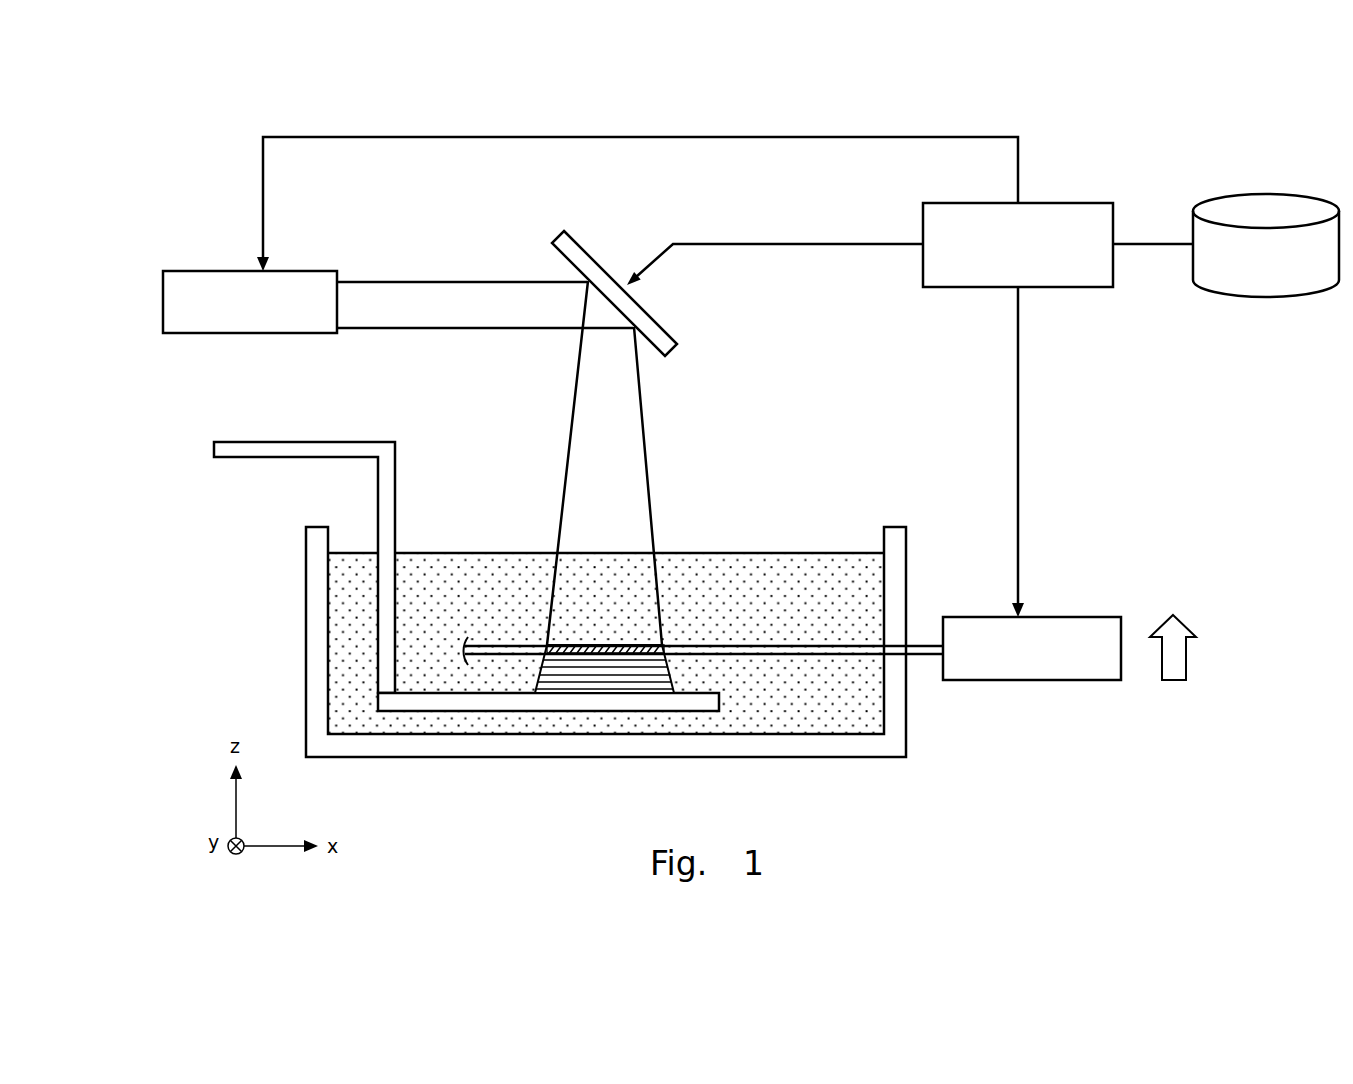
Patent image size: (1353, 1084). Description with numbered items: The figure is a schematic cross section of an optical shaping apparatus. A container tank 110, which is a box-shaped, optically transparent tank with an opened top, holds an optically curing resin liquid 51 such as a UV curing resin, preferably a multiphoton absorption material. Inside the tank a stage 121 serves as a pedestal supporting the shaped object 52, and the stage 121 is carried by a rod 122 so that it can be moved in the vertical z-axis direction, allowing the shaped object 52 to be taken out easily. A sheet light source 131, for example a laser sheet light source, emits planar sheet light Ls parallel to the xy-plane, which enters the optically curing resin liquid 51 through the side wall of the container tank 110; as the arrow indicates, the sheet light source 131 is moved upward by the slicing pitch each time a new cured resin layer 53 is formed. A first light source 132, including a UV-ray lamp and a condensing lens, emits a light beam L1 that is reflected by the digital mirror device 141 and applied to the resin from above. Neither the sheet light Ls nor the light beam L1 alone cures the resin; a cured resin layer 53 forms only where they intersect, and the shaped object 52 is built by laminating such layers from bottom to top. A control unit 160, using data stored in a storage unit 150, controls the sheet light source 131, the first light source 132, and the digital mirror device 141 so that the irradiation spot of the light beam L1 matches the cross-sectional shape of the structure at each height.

The container tank 110 is at (310, 617).
The stage 121 is at (620, 705).
The rod 122 is at (297, 442).
The sheet light source 131 is at (1023, 683).
The first light source 132 is at (163, 305).
The digital mirror device 141 is at (677, 337).
The storage unit 150 is at (1265, 200).
The control unit 160 is at (1104, 202).
The optically curing resin liquid 51 is at (468, 558).
The shaped object 52 is at (660, 678).
The cured resin layer 53 is at (607, 645).
The light beam L1 is at (572, 452).
The sheet light Ls is at (922, 646).